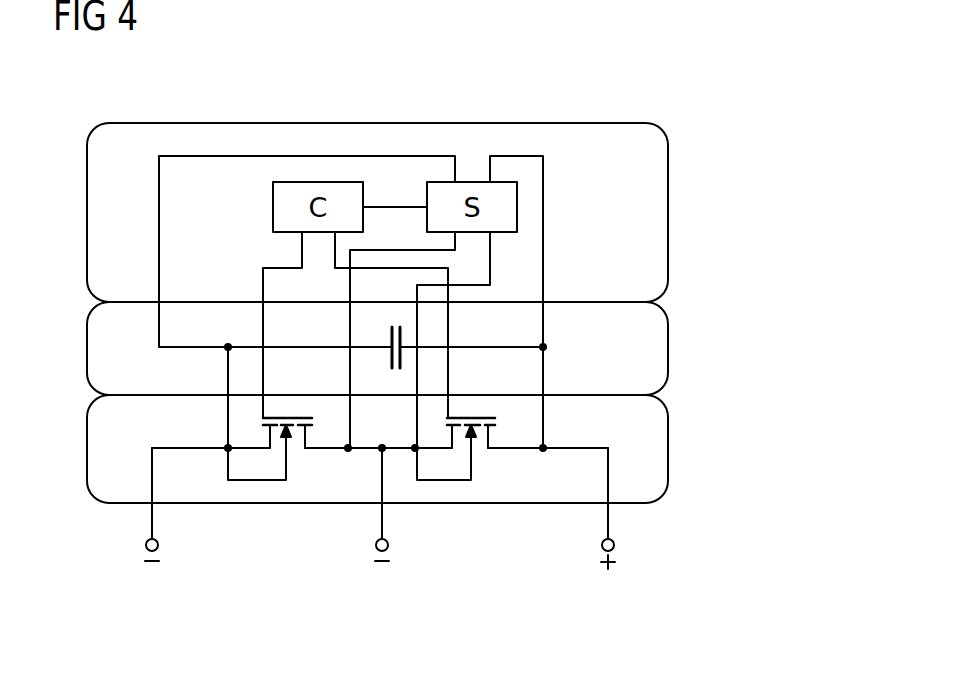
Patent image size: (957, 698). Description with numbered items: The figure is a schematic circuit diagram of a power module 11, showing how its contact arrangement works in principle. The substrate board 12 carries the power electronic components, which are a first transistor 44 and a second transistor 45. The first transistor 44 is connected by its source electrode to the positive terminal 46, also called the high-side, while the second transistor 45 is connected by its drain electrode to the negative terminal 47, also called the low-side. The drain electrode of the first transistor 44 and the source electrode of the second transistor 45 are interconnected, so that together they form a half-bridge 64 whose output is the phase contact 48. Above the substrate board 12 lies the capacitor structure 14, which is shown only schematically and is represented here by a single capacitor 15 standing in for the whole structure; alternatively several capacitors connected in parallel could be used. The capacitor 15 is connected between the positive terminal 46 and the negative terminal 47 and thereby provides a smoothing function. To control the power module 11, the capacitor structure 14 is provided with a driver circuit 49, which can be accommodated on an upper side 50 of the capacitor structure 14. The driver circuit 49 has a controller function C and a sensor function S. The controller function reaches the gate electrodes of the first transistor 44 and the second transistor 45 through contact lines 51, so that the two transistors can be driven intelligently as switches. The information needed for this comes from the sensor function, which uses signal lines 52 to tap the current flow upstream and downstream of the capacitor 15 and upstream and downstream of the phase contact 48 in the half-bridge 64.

The power module 11 is at (440, 256).
The substrate board 12 is at (712, 445).
The capacitor structure 14 is at (712, 340).
The capacitor 15 is at (398, 318).
The first transistor 44 is at (482, 456).
The second transistor 45 is at (297, 456).
The positive terminal 46 is at (608, 523).
The negative terminal 47 is at (152, 523).
The phase contact 48 is at (388, 550).
The driver circuit 49 is at (712, 207).
The upper side 50 is at (616, 282).
The contact lines 51 is at (262, 330).
The signal lines 52 is at (347, 318).
The half-bridge 64 is at (367, 450).